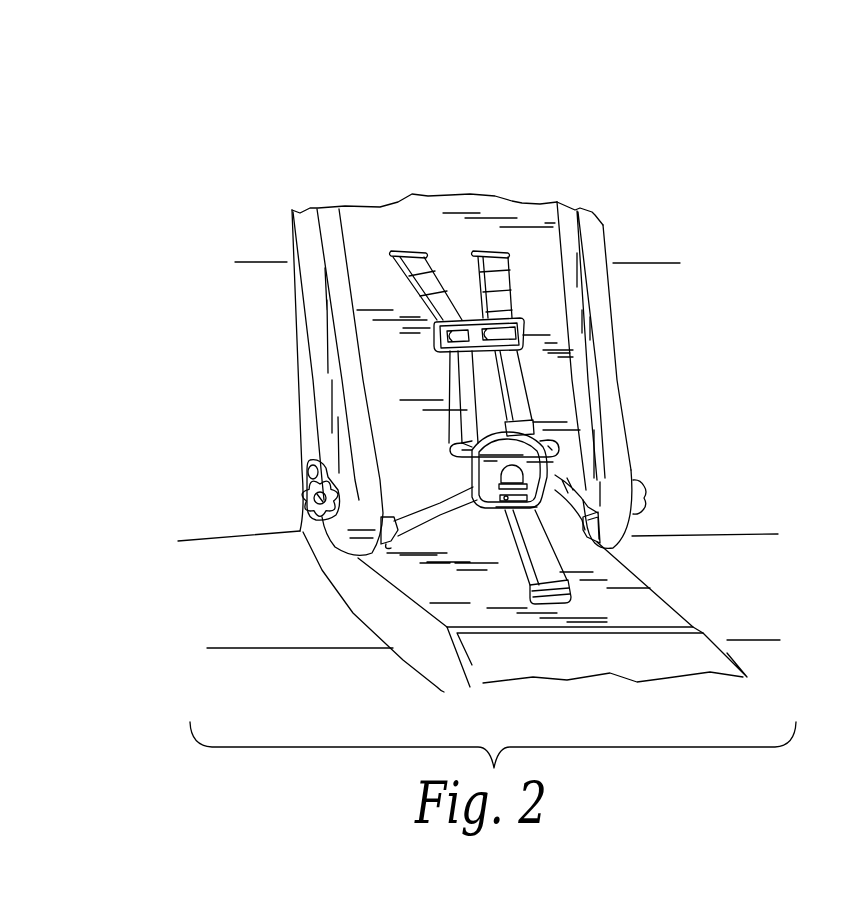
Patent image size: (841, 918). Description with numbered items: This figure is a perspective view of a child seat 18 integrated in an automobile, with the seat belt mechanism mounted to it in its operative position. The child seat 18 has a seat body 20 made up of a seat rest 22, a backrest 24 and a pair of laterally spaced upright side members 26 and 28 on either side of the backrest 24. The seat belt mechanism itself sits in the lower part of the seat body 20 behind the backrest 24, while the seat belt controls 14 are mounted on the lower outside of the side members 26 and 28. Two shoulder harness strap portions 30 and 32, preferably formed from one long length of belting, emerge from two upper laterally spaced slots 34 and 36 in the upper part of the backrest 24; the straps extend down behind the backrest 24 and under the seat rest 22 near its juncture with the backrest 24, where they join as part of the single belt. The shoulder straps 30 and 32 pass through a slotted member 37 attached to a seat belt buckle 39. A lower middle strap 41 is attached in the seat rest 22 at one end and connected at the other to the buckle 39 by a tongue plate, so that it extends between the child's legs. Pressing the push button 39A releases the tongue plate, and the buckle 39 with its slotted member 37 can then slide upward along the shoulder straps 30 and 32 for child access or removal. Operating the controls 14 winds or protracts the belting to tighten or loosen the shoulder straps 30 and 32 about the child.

The seat belt controls 14 is at (299, 502).
The child seat 18 is at (268, 310).
The seat body 20 is at (295, 383).
The seat rest 22 is at (390, 580).
The backrest 24 is at (417, 208).
The side member 26 is at (308, 218).
The side member 28 is at (592, 233).
The shoulder harness strap portion 30 is at (465, 372).
The shoulder harness strap portion 32 is at (513, 373).
The upper slot 34 is at (393, 252).
The upper slot 36 is at (510, 253).
The slotted member 37 is at (548, 452).
The seat belt buckle 39 is at (556, 464).
The push button 39A is at (518, 473).
The lower middle strap 41 is at (543, 558).